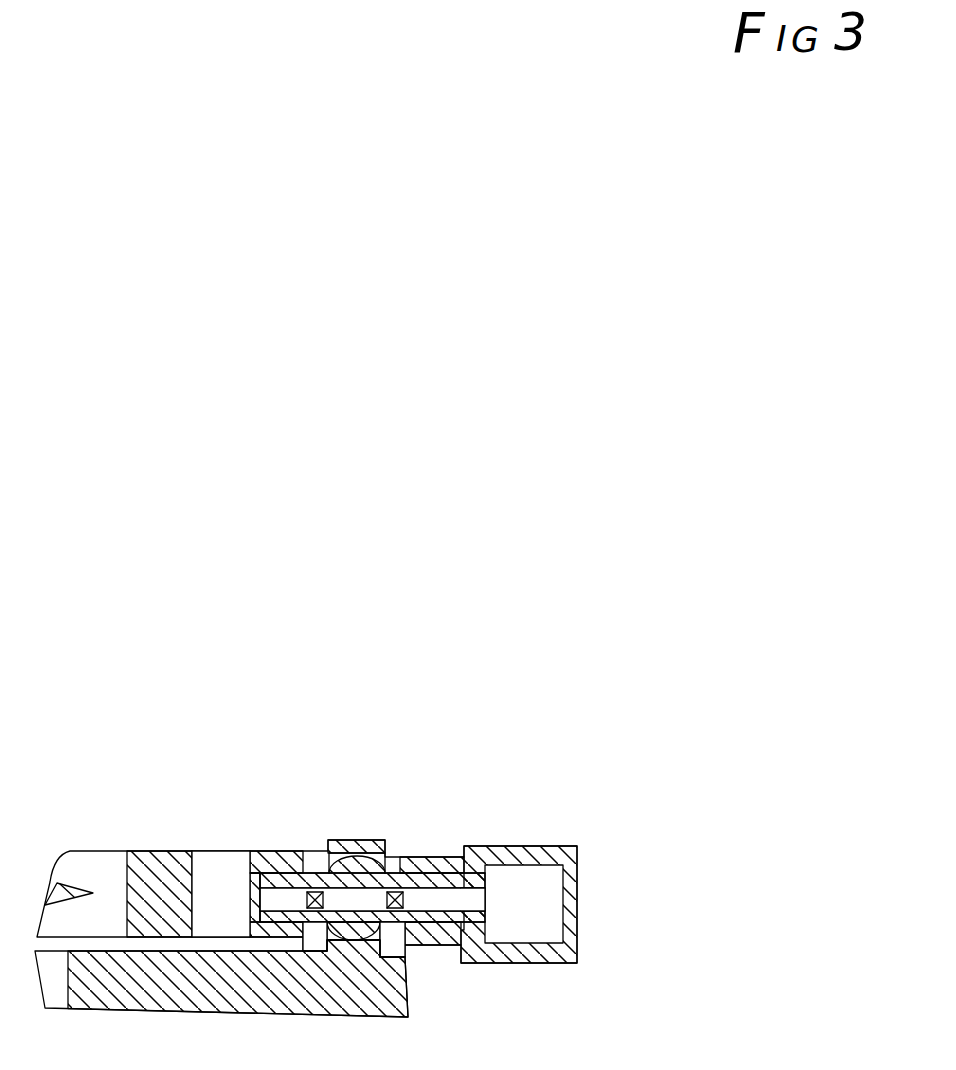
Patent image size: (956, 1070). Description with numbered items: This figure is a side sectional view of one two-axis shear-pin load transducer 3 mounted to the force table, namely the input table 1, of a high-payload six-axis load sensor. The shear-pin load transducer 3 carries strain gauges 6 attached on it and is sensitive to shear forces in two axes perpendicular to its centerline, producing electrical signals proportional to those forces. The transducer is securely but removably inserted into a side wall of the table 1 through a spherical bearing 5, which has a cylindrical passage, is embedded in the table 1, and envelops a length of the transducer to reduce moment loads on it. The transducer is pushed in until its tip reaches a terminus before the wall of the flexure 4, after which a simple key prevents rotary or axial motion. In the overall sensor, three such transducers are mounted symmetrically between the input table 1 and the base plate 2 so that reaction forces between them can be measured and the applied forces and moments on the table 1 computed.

The input table 1 is at (178, 852).
The base plate 2 is at (410, 993).
The shear-pin load transducer 3 is at (575, 927).
The flexure 4 is at (221, 880).
The spherical bearing 5 is at (384, 858).
The strain gauges 6 is at (318, 886).